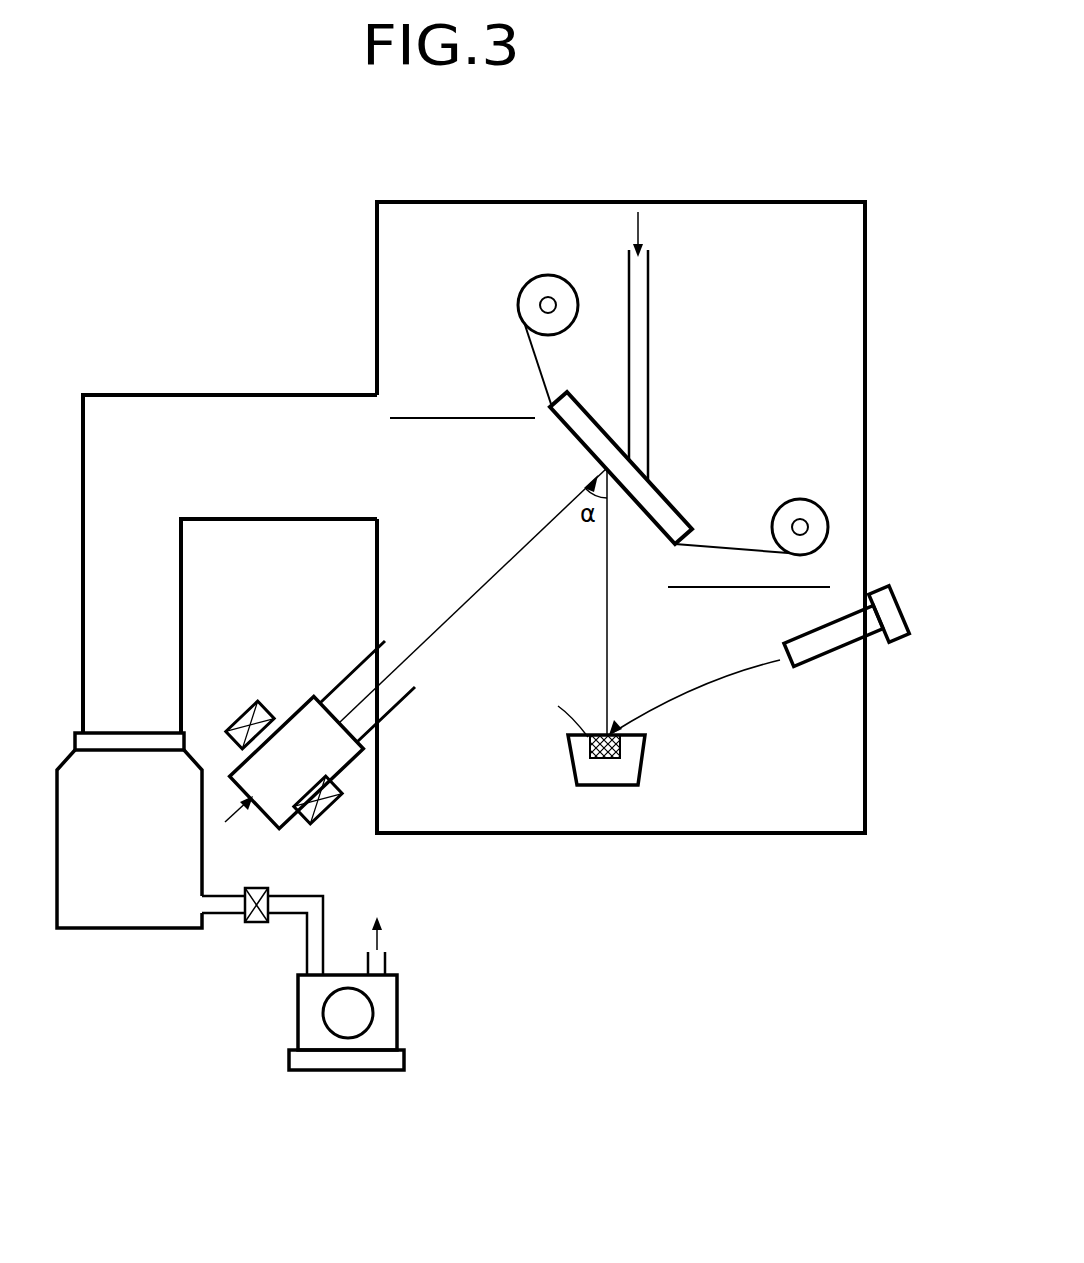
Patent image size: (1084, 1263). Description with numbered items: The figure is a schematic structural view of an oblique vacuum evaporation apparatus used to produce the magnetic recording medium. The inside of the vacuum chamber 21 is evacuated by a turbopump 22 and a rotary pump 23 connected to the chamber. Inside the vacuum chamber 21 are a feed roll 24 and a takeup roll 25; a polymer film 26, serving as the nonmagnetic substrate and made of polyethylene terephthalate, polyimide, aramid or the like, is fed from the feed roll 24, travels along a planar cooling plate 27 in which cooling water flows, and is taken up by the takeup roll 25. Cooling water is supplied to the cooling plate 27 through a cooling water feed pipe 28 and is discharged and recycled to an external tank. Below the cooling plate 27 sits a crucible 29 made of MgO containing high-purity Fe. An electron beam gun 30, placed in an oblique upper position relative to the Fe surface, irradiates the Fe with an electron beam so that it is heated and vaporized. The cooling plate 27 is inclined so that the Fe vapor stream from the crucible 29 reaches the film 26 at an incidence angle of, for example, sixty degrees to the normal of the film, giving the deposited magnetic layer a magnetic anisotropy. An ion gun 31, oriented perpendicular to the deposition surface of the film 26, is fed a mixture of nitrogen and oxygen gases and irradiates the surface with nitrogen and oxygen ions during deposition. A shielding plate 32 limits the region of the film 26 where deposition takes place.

The vacuum chamber 21 is at (551, 201).
The turbopump 22 is at (127, 930).
The rotary pump 23 is at (397, 1000).
The feed roll 24 is at (802, 498).
The takeup roll 25 is at (528, 281).
The polymer film 26 is at (731, 545).
The cooling plate 27 is at (662, 488).
The cooling water feed pipe 28 is at (648, 323).
The crucible 29 is at (645, 748).
The electron beam gun 30 is at (897, 648).
The ion gun 31 is at (297, 705).
The shielding plate 32 is at (448, 420).